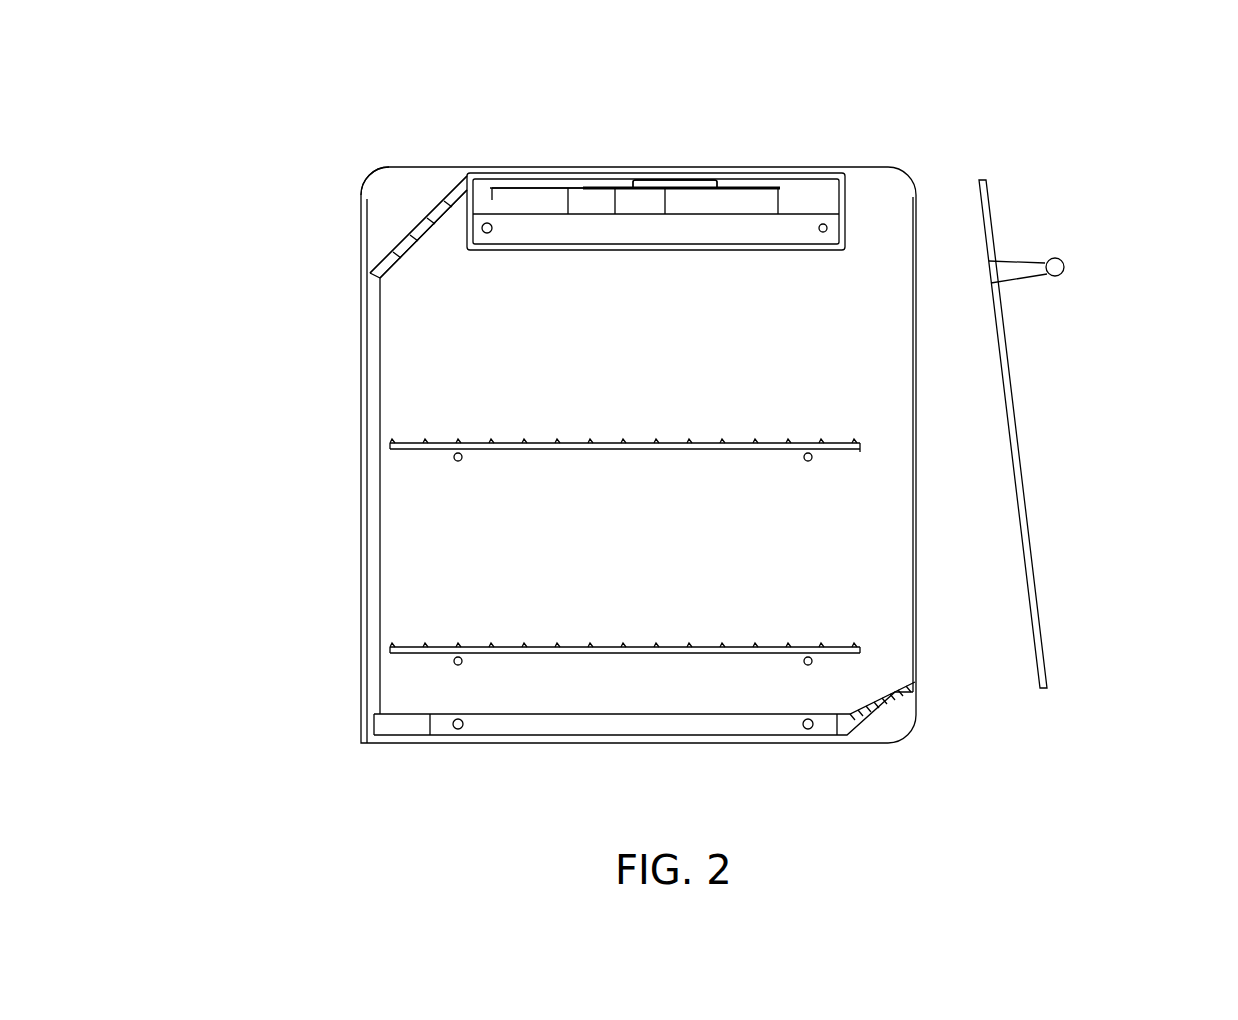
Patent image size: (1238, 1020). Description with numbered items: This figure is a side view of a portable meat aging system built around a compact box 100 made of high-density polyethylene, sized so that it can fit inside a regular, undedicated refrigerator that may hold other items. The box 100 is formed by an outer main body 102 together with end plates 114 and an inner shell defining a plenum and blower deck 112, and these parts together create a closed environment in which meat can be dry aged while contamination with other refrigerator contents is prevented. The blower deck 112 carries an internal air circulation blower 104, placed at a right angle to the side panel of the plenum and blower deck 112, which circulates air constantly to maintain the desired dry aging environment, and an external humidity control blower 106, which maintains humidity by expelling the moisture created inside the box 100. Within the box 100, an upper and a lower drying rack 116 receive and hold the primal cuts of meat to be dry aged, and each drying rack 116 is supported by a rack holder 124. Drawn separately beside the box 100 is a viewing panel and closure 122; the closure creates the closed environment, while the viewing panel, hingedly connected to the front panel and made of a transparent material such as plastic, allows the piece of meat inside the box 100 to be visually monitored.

The box 100 is at (323, 565).
The outer main body 102 is at (378, 282).
The internal air circulation blower 104 is at (525, 204).
The external humidity control blower 106 is at (740, 204).
The plenum and blower deck 112 is at (850, 196).
The end plates 114 is at (363, 200).
The drying rack 116 is at (860, 452).
The viewing panel and closure 122 is at (985, 190).
The rack holder 124 is at (812, 457).